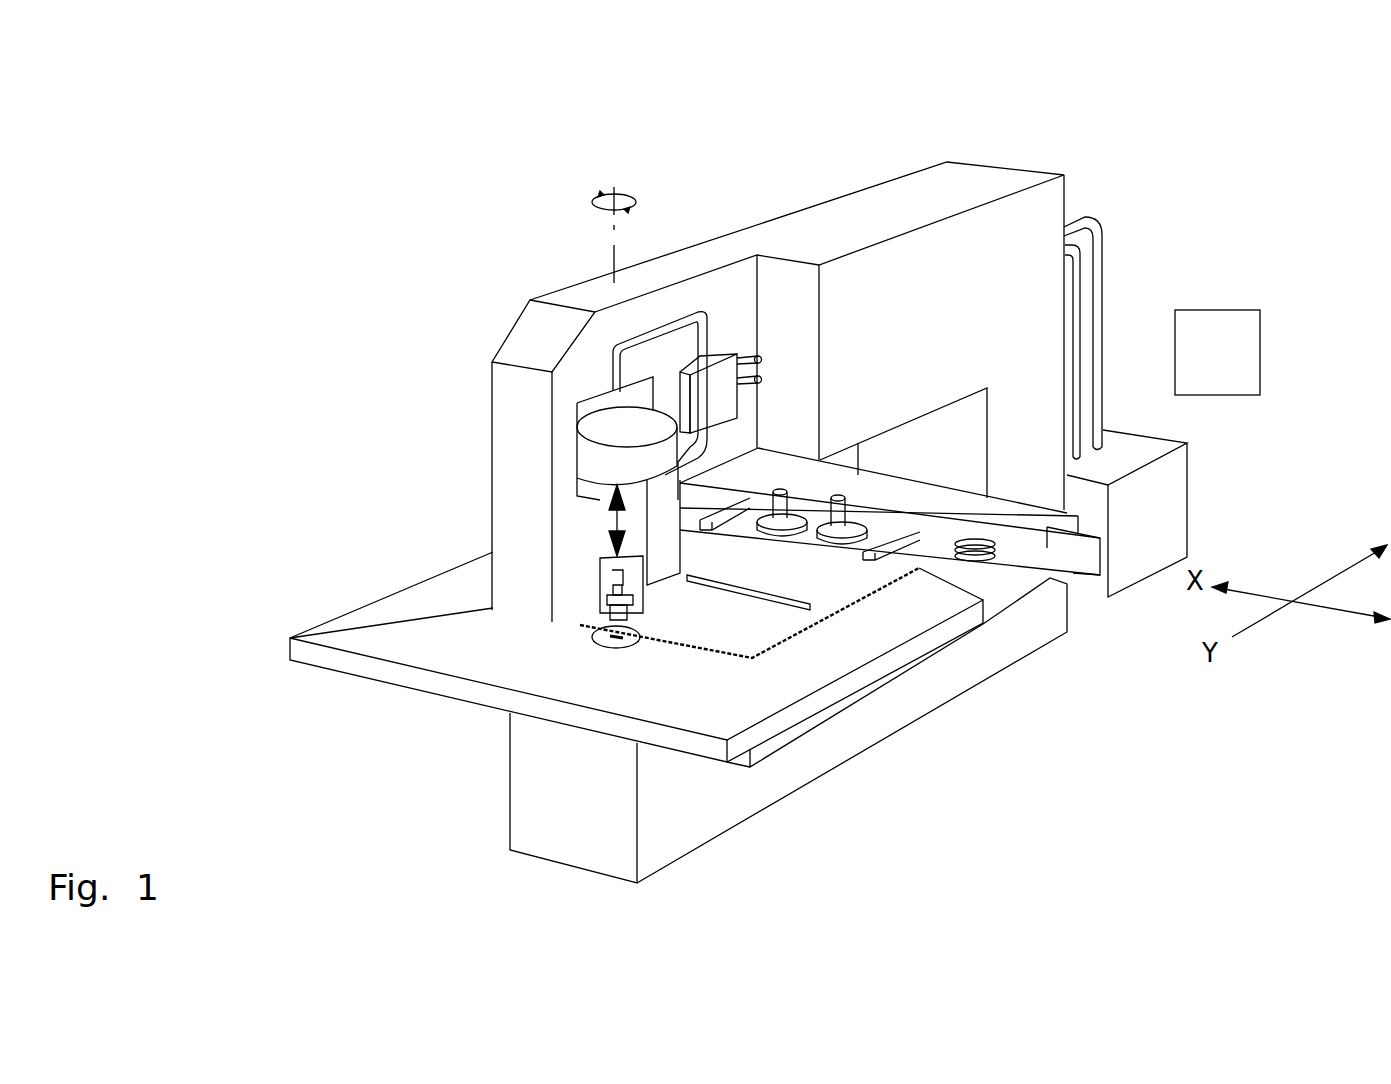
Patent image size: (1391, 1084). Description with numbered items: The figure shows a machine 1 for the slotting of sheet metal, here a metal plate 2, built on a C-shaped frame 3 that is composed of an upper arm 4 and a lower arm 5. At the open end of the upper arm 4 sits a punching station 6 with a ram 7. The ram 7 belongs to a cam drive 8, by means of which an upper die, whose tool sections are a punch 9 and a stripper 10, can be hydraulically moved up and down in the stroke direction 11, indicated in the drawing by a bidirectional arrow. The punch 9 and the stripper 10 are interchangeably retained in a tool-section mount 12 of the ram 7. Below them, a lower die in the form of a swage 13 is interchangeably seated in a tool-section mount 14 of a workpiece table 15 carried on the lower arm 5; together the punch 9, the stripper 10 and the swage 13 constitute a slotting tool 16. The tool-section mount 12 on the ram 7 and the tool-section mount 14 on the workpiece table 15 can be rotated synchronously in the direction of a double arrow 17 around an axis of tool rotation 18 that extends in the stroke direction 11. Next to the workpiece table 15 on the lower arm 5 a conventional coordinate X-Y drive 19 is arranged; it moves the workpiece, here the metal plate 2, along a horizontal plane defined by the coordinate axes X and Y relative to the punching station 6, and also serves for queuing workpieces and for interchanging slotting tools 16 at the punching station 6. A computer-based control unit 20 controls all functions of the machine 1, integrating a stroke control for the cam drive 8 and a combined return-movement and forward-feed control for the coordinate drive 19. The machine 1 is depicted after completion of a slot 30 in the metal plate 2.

The machine 1 is at (1112, 283).
The metal plate 2 is at (866, 595).
The C-shaped frame 3 is at (1030, 163).
The upper arm 4 is at (845, 200).
The lower arm 5 is at (518, 818).
The punching station 6 is at (568, 497).
The ram 7 is at (600, 488).
The cam drive 8 is at (590, 430).
The punch 9 is at (604, 588).
The stripper 10 is at (600, 602).
The stroke direction 11 is at (612, 523).
The tool-section mount 12 is at (493, 565).
The swage 13 is at (600, 650).
The tool-section mount 14 is at (607, 648).
The workpiece table 15 is at (789, 731).
The slotting tool 16 is at (870, 521).
The double arrow 17 is at (590, 200).
The axis of tool rotation 18 is at (613, 267).
The coordinate X-Y drive 19 is at (1062, 588).
The control unit 20 is at (1232, 368).
The slot 30 is at (818, 609).